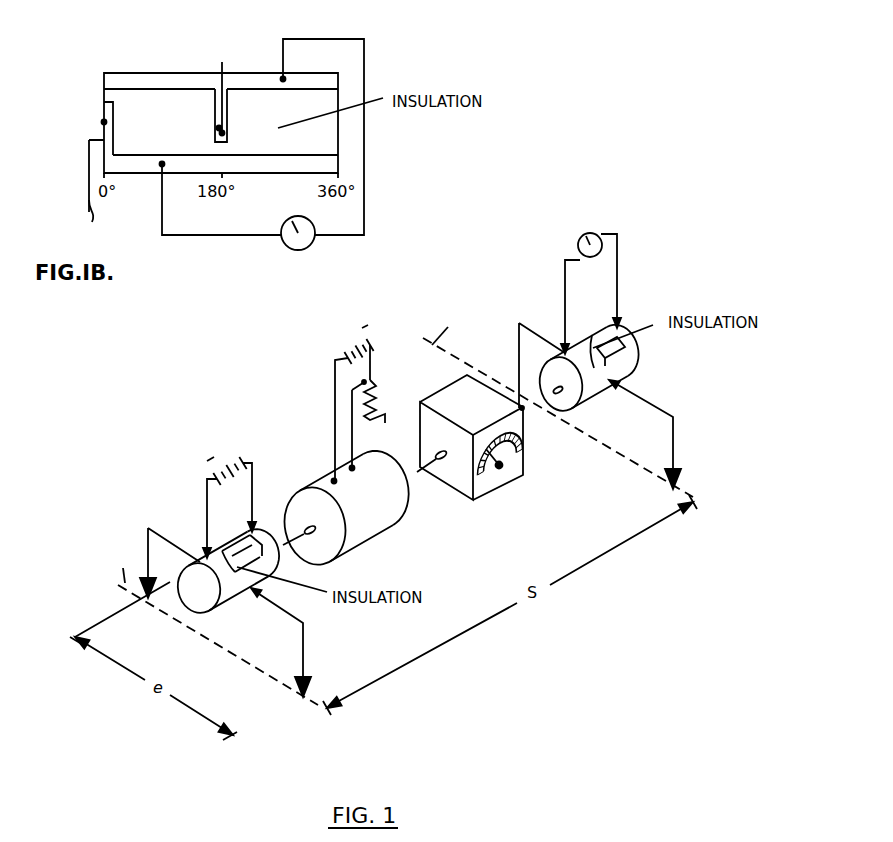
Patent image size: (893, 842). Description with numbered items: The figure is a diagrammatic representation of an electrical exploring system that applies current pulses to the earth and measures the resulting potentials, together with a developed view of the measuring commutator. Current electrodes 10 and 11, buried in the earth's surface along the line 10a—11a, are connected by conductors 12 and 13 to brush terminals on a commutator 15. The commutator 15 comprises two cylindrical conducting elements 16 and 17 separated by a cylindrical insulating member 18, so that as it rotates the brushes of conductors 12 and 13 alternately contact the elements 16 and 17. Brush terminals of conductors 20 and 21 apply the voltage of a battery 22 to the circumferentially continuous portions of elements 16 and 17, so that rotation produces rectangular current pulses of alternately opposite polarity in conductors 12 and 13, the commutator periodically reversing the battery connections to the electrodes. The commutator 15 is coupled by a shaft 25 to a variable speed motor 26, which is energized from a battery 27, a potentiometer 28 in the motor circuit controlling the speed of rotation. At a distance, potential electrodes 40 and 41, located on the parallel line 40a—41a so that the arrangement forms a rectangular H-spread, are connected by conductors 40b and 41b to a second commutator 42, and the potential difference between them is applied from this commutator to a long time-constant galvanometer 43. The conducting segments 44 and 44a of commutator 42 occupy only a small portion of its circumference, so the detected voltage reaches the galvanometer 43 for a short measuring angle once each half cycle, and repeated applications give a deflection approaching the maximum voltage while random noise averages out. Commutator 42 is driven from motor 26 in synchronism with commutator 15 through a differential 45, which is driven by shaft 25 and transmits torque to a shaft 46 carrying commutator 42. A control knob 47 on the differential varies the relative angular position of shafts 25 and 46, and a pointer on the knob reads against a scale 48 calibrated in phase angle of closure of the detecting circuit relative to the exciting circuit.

In FIG. 1, the electrode 10 is at (170, 583).
In FIG. 1, the end point of electrode line 10a is at (124, 567).
In FIG. 1, the electrode 11 is at (308, 680).
In FIG. 1, the end point of electrode line 11a is at (325, 705).
In FIG. 1, the conductor 12 is at (165, 531).
In FIG. 1, the conductor 13 is at (290, 613).
In FIG. 1, the commutator 15 is at (206, 599).
In FIG. 1, the cylindrical conducting element 16 is at (226, 592).
In FIG. 1, the cylindrical conducting element 17 is at (240, 533).
In FIG. 1, the cylindrical insulating member 18 is at (245, 557).
In FIG. 1, the conductor 20 is at (207, 505).
In FIG. 1, the conductor 21 is at (257, 478).
In FIG. 1, the battery 22 is at (224, 460).
In FIG. 1, the shaft 25 is at (280, 546).
In FIG. 1, the variable speed motor 26 is at (343, 562).
In FIG. 1, the battery 27 is at (368, 340).
In FIG. 1, the potentiometer 28 is at (378, 424).
In FIG. 1, the potential electrode 40 is at (681, 465).
In FIG. 1, the end point of potential electrode line 40a is at (696, 496).
In FIG. 1B, the conductor 40b is at (100, 217).
In FIG. 1, the conductor 40b is at (676, 403).
In FIG. 1, the potential electrode 41 is at (520, 395).
In FIG. 1, the end point of potential electrode line 41a is at (453, 328).
In FIG. 1B, the conductor 41b is at (236, 53).
In FIG. 1, the conductor 41b is at (519, 323).
In FIG. 1B, the commutator 42 is at (357, 30).
In FIG. 1, the commutator 42 is at (600, 328).
In FIG. 1B, the galvanometer 43 is at (295, 250).
In FIG. 1, the galvanometer 43 is at (600, 231).
In FIG. 1B, the conducting segment 44 is at (104, 122).
In FIG. 1, the conducting segment 44 is at (607, 358).
In FIG. 1B, the conducting segment 44a is at (218, 128).
In FIG. 1, the differential 45 is at (478, 411).
In FIG. 1, the shaft 46 is at (527, 410).
In FIG. 1, the control knob 47 is at (501, 468).
In FIG. 1, the scale 48 is at (520, 450).